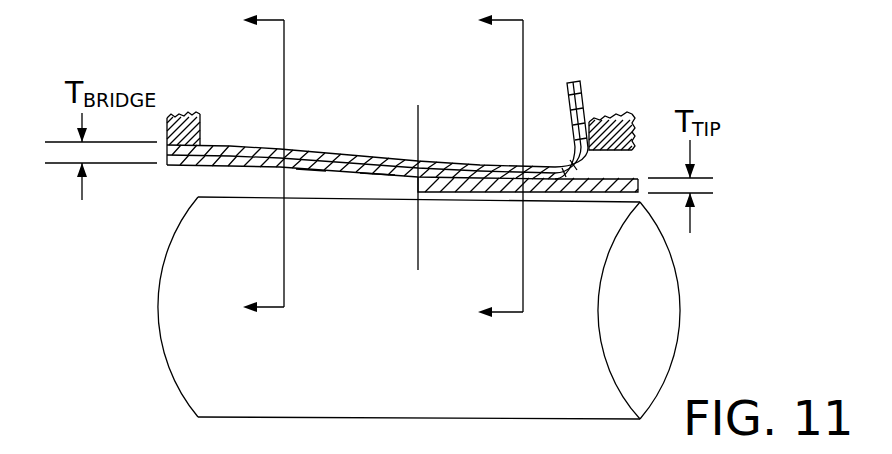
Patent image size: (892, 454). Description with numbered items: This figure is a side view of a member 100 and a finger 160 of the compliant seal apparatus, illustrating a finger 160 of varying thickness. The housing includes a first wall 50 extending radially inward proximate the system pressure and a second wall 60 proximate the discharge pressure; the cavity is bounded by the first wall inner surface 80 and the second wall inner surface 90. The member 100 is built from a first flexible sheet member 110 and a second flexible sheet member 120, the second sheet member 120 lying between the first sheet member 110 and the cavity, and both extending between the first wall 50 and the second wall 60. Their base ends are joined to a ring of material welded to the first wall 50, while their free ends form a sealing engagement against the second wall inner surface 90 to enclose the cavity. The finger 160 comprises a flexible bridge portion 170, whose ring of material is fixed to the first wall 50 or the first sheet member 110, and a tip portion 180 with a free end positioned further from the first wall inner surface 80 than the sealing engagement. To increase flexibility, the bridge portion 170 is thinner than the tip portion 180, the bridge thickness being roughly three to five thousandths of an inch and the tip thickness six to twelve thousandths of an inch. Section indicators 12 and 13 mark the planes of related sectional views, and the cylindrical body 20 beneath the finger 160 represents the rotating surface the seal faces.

The section line 12- 12 is at (470, 166).
The section line 13- 13 is at (244, 163).
The cylindrical body 20 is at (225, 385).
The first wall 50 is at (184, 113).
The second wall 60 is at (633, 113).
The first wall inner surface 80 is at (200, 132).
The second wall inner surface 90 is at (589, 118).
The member 100 is at (586, 68).
The first flexible sheet member 110 is at (242, 166).
The second flexible sheet member 120 is at (327, 147).
The finger 160 is at (377, 178).
The bridge portion 170 is at (313, 192).
The tip portion 180 is at (628, 172).